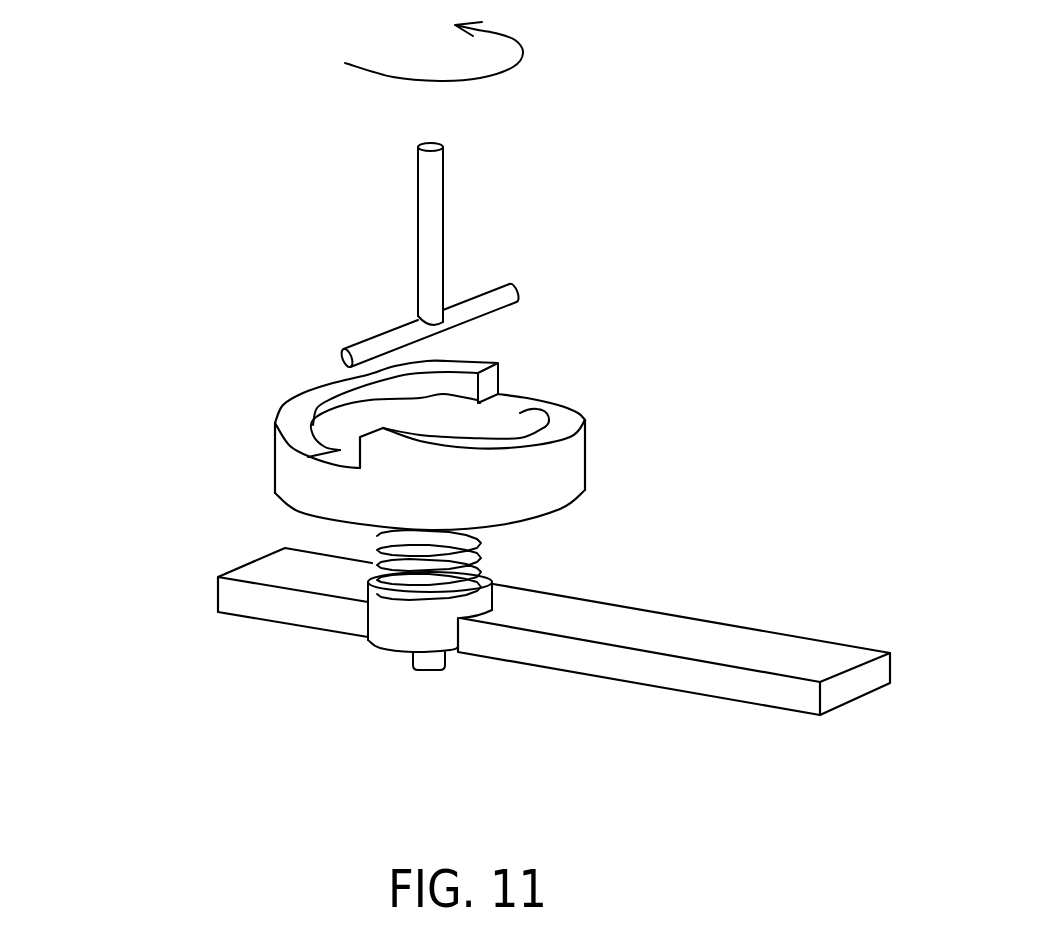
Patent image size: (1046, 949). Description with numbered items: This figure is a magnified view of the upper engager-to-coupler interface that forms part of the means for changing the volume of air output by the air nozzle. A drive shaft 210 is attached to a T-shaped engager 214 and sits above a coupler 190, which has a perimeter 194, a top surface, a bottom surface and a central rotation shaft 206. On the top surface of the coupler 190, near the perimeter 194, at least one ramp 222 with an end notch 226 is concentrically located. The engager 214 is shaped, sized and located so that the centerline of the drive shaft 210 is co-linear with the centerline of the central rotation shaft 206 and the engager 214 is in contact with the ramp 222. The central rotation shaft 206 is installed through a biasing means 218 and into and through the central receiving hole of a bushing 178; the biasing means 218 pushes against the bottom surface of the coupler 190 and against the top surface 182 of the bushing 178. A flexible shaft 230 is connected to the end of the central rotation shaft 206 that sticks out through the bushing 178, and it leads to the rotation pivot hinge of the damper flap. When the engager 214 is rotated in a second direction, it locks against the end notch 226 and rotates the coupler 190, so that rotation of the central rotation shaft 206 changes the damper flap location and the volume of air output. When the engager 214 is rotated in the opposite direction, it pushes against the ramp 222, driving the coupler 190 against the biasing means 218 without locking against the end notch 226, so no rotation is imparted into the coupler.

The bushing 178 is at (382, 647).
The top surface 182 is at (493, 578).
The coupler 190 is at (527, 398).
The perimeter 194 is at (572, 460).
The central rotation shaft 206 is at (378, 545).
The drive shaft 210 is at (432, 197).
The engager 214 is at (507, 297).
The biasing means 218 is at (367, 597).
The ramp 222 is at (311, 393).
The end notch 226 is at (488, 380).
The flexible shaft 230 is at (430, 662).